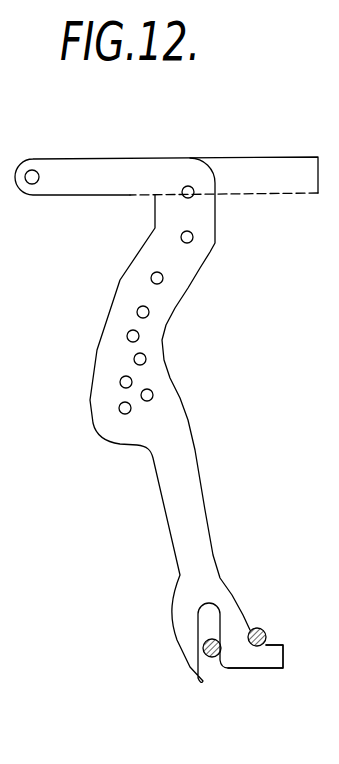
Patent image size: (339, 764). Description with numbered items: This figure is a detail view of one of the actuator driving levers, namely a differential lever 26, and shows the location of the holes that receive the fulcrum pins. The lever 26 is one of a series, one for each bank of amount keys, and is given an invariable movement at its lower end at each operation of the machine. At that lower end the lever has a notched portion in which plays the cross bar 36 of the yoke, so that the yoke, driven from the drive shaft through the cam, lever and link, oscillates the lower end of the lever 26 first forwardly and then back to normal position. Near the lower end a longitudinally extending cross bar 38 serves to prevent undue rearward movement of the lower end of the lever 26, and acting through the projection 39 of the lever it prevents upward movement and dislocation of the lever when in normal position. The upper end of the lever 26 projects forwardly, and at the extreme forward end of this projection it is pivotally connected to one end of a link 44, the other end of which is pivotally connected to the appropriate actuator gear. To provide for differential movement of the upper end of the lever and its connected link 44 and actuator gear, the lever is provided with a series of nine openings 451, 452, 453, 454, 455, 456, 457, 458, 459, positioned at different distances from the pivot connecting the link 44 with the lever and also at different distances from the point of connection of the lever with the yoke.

The differential lever 26 is at (197, 468).
The link 44 is at (292, 190).
The opening 451 is at (194, 196).
The opening 452 is at (193, 237).
The opening 453 is at (163, 278).
The opening 454 is at (149, 312).
The opening 455 is at (139, 336).
The opening 456 is at (146, 359).
The opening 457 is at (132, 382).
The opening 458 is at (153, 395).
The opening 459 is at (131, 408).
The cross bar 36 is at (220, 662).
The cross bar 38 is at (265, 631).
The projection 39 is at (283, 650).